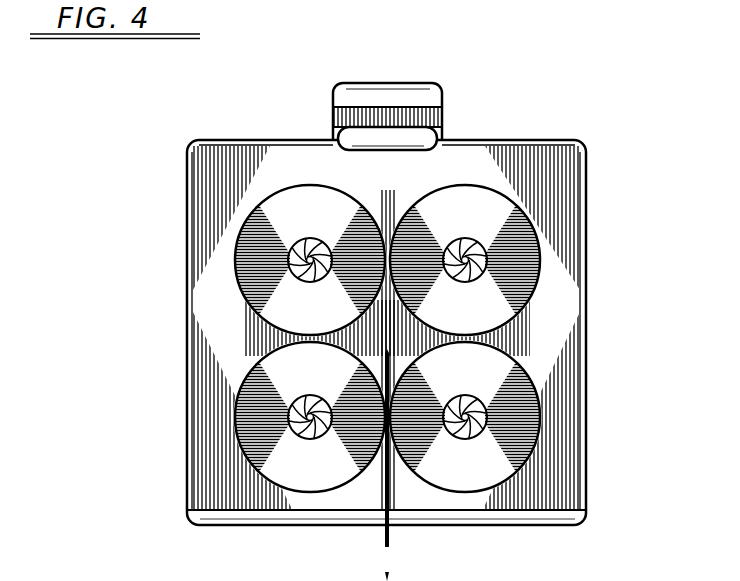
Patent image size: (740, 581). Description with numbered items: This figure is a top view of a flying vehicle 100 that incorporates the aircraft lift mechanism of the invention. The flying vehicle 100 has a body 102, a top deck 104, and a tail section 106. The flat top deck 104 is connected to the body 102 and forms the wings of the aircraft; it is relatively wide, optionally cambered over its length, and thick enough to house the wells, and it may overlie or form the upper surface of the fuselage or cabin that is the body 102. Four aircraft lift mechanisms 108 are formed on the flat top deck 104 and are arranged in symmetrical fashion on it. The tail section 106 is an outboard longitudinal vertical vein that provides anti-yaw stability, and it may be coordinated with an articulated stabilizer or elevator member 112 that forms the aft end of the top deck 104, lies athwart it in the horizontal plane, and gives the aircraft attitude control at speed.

The flying vehicle 100 is at (423, 313).
The body 102 is at (402, 83).
The top deck 104 is at (567, 302).
The tail section 106 is at (392, 530).
The aircraft lift mechanism 108 is at (537, 248).
The elevator member 112 is at (552, 527).